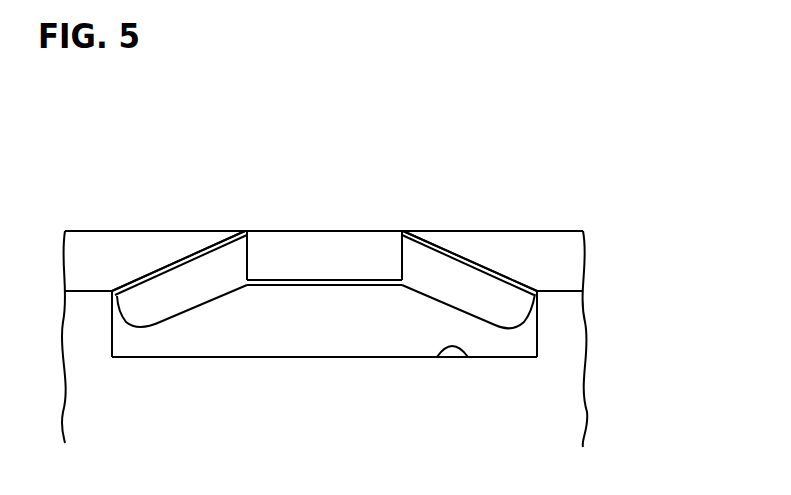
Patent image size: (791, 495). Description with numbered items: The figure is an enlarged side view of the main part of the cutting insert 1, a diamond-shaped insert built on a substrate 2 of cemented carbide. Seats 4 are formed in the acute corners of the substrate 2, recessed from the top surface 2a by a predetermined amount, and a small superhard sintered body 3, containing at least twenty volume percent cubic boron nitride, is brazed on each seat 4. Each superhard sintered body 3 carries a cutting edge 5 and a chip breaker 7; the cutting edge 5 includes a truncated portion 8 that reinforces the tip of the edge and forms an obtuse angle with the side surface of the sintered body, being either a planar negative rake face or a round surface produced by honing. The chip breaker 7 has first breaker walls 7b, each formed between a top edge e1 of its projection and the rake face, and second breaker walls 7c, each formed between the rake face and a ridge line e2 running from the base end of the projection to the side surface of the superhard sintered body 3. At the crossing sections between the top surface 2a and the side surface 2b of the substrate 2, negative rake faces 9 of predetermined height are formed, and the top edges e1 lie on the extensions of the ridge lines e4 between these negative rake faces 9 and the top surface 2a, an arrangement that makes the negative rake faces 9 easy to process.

The cutting insert 1 is at (392, 195).
The substrate 2 is at (547, 424).
The top surface 2a is at (568, 231).
The side surface 2b is at (550, 395).
The superhard sintered body 3 is at (537, 333).
The seat 4 is at (468, 357).
The cutting edge 5 is at (262, 287).
The chip breaker 7 is at (278, 231).
The first breaker wall 7b is at (357, 249).
The second breaker wall 7c is at (212, 265).
The truncated portion 8 is at (300, 287).
The negative rake face 9 is at (87, 245).
The top edge e1 is at (390, 231).
The ridge line e2 is at (448, 231).
The ridge line e4 is at (132, 231).